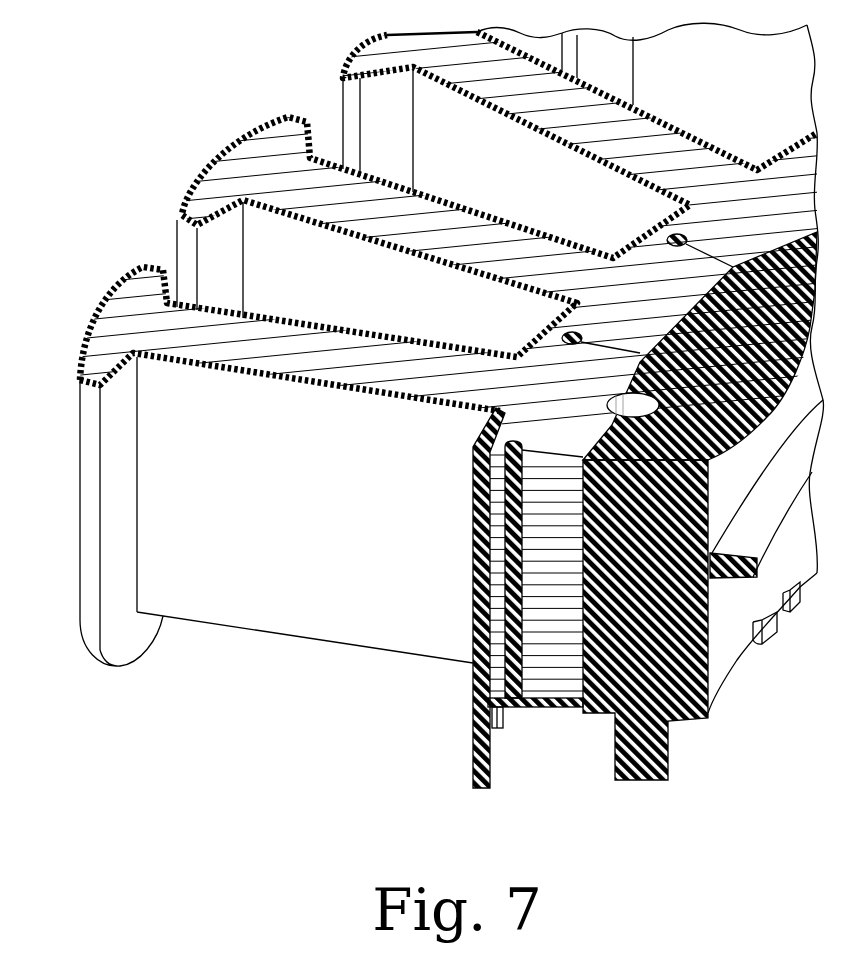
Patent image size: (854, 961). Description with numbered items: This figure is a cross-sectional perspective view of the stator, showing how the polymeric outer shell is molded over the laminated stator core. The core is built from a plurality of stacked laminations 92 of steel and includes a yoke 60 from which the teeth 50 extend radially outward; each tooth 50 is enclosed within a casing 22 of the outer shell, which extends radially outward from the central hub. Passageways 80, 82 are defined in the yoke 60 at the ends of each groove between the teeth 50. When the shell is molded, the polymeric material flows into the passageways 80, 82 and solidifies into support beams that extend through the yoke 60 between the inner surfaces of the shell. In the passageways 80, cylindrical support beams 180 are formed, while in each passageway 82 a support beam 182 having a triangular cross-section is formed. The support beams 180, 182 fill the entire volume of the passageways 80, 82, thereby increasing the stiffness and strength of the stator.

The casing 22 is at (90, 565).
The tooth 50 is at (95, 332).
The yoke 60 is at (598, 312).
The passageway 80 is at (480, 596).
The passageway 82 is at (573, 683).
The lamination 92 is at (497, 458).
The cylindrical support beam 180 is at (497, 650).
The support beam 182 is at (570, 707).